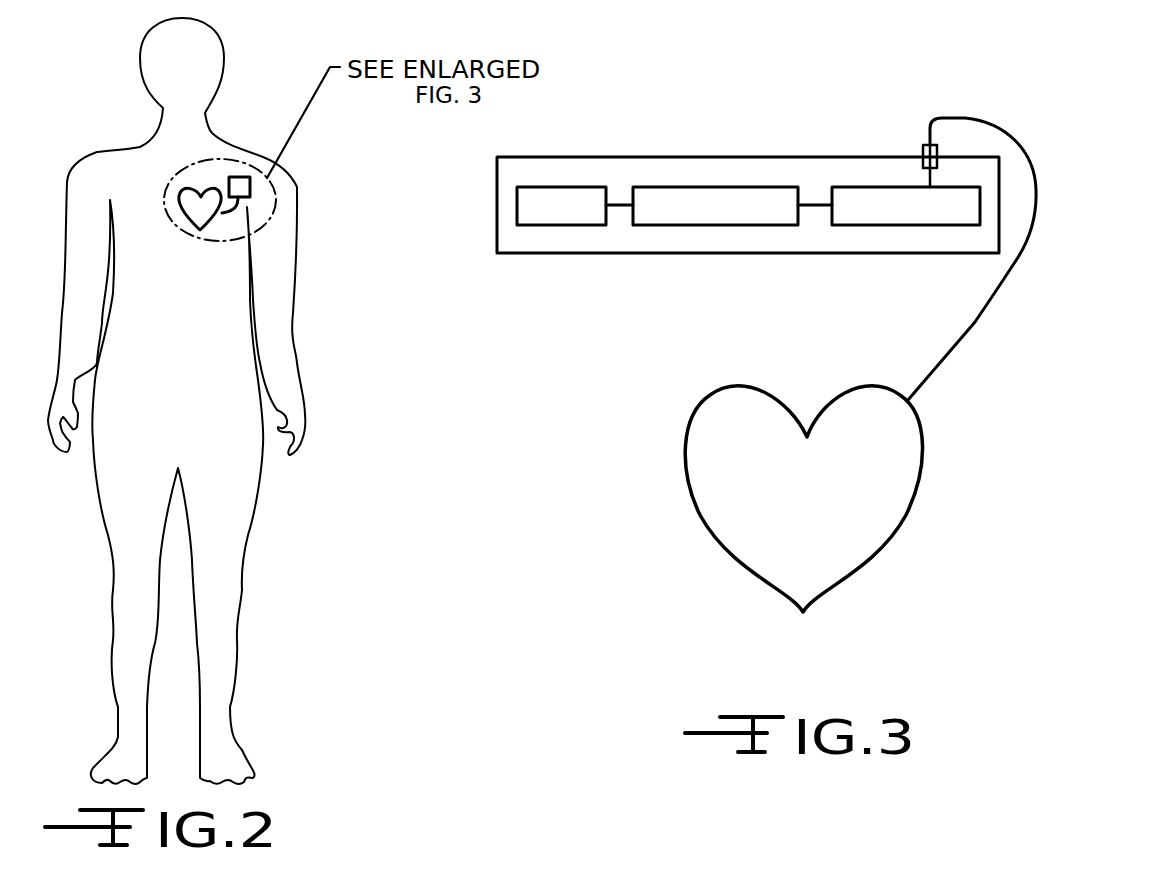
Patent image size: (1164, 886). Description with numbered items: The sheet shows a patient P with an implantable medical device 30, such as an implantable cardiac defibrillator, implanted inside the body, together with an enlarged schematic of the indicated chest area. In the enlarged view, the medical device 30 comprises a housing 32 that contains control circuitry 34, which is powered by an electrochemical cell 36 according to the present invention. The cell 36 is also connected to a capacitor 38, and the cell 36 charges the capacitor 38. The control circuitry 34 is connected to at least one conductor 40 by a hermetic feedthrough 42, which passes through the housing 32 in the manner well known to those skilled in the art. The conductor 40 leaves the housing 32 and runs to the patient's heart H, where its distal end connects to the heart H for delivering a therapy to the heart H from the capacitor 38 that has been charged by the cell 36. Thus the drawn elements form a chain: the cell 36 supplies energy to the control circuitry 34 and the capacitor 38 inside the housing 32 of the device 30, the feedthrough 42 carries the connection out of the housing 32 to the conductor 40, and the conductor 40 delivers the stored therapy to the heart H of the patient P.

In FIG. 2, the patient P is at (207, 120).
In FIG. 2, the heart H is at (187, 218).
In FIG. 3, the heart H is at (930, 453).
In FIG. 2, the medical device 30 is at (243, 175).
In FIG. 3, the medical device 30 is at (767, 189).
In FIG. 3, the housing 32 is at (842, 157).
In FIG. 3, the control circuitry 34 is at (922, 226).
In FIG. 3, the electrochemical cell 36 is at (555, 226).
In FIG. 3, the capacitor 38 is at (770, 226).
In FIG. 3, the conductor 40 is at (1036, 222).
In FIG. 3, the hermetic feedthrough 42 is at (938, 150).